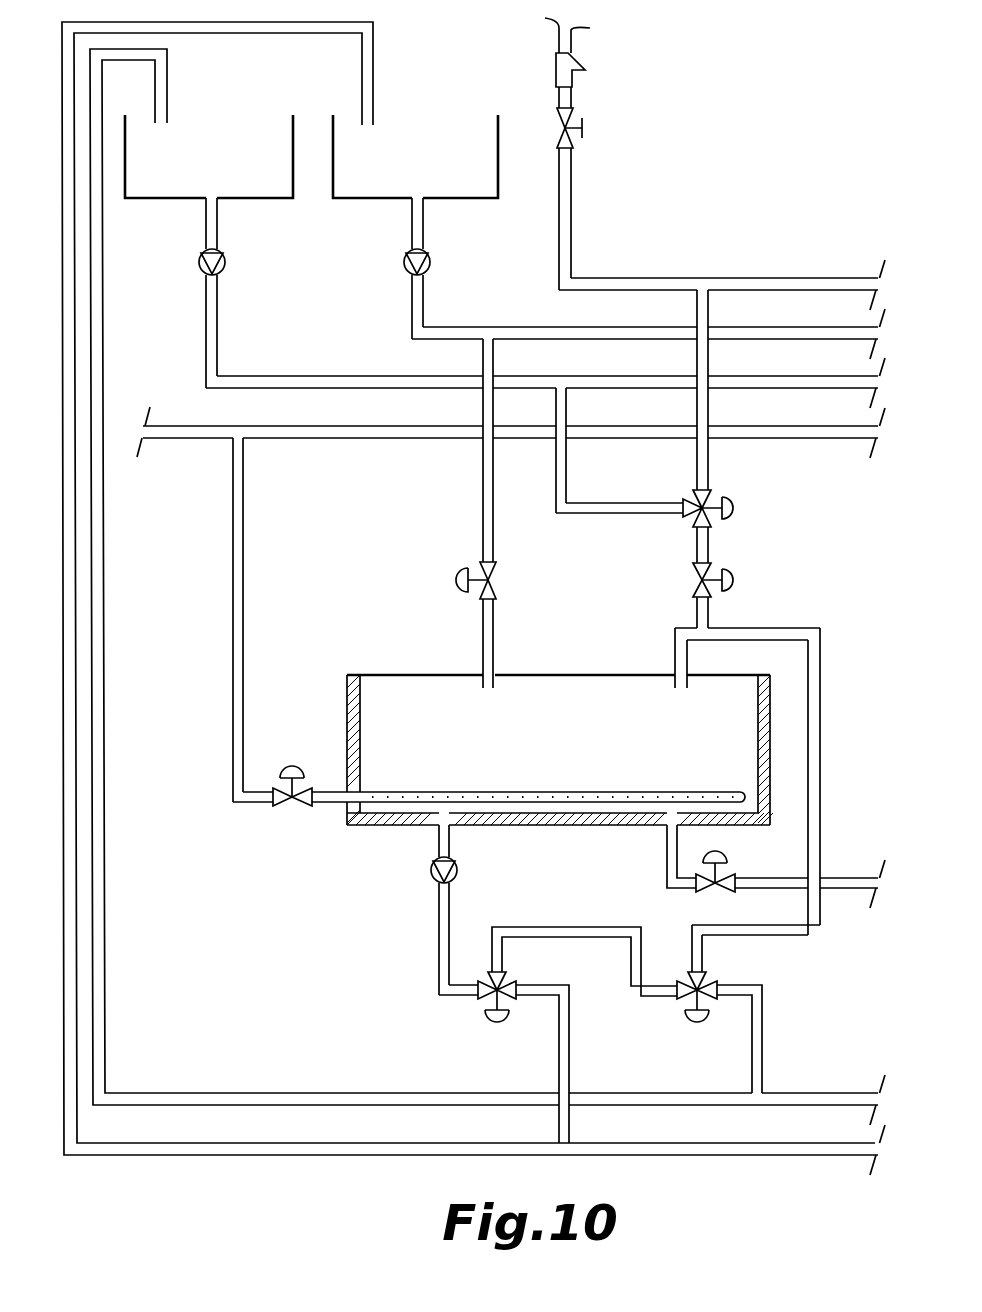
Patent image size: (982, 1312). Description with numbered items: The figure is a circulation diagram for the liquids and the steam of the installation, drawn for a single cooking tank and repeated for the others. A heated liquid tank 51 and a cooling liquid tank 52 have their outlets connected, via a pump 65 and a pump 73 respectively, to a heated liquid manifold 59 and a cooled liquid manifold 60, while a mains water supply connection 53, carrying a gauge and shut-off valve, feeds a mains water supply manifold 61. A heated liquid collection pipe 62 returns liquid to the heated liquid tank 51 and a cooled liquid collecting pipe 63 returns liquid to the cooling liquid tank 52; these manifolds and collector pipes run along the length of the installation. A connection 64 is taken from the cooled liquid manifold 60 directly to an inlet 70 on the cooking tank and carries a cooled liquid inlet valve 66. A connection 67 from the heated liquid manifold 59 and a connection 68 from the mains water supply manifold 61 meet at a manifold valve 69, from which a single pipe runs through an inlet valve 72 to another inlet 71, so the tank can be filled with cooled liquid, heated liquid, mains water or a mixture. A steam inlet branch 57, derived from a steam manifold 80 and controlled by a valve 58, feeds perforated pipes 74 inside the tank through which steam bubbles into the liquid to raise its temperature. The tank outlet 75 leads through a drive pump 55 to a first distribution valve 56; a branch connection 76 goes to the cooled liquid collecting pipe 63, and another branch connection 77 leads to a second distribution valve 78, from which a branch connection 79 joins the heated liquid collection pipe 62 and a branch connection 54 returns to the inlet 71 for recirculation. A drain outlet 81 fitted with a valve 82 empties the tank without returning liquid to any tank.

The heated liquid tank 51 is at (264, 171).
The cooling liquid tank 52 is at (472, 171).
The mains water supply connection 53 is at (556, 42).
The branch connection 54 is at (821, 738).
The drive pump 55 is at (433, 878).
The first distribution valve 56 is at (480, 998).
The steam inlet branch 57 is at (243, 580).
The valve 58 is at (296, 806).
The heated liquid manifold 59 is at (353, 376).
The cooled liquid manifold 60 is at (558, 327).
The mains water supply manifold 61 is at (812, 278).
The heated liquid collection pipe 62 is at (287, 1093).
The cooled liquid collecting pipe 63 is at (347, 1155).
The connection 64 is at (483, 490).
The pump 65 is at (225, 259).
The cooled liquid inlet valve 66 is at (500, 582).
The connection 67 is at (566, 457).
The connection 68 is at (710, 353).
The manifold valve 69 is at (712, 490).
The inlet 70 is at (483, 665).
The inlet 71 is at (676, 668).
The inlet valve 72 is at (695, 588).
The pump 73 is at (405, 270).
The perforated pipes 74 is at (566, 792).
The outlet 75 is at (439, 838).
The branch connection 76 is at (570, 1062).
The branch connection 77 is at (575, 927).
The second distribution valve 78 is at (706, 975).
The branch connection 79 is at (763, 1062).
The steam manifold 80 is at (187, 426).
The drain outlet 81 is at (667, 840).
The valve 82 is at (730, 873).